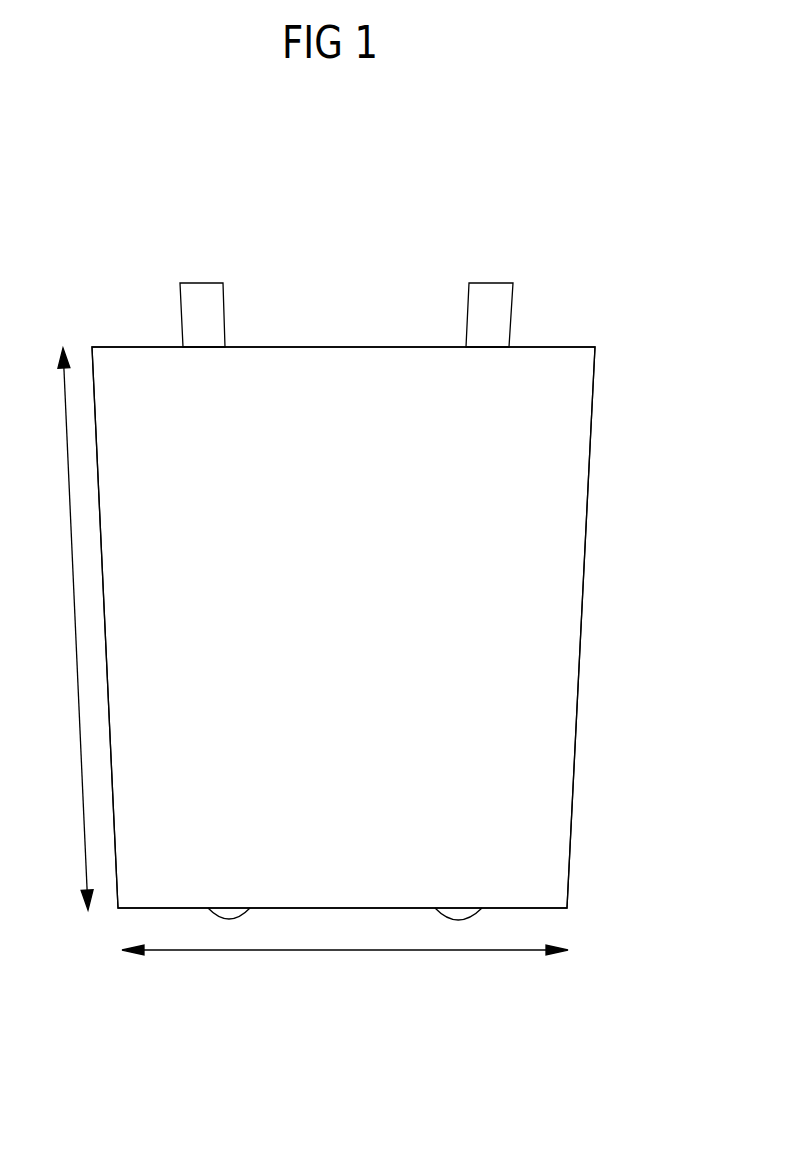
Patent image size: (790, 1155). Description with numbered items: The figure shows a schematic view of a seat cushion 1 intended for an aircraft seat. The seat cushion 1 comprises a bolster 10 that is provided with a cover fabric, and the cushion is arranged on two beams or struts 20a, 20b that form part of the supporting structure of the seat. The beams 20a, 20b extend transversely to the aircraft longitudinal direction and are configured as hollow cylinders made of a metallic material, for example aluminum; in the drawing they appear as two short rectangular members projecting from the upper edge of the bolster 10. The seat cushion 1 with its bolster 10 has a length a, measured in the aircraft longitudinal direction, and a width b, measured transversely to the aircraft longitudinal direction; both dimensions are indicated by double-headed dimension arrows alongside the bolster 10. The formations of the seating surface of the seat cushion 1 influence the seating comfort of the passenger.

The seat cushion 1 is at (615, 329).
The bolster 10 is at (588, 543).
The beam 20a is at (197, 305).
The beam 20b is at (493, 303).
The length a is at (345, 965).
The width b is at (70, 629).